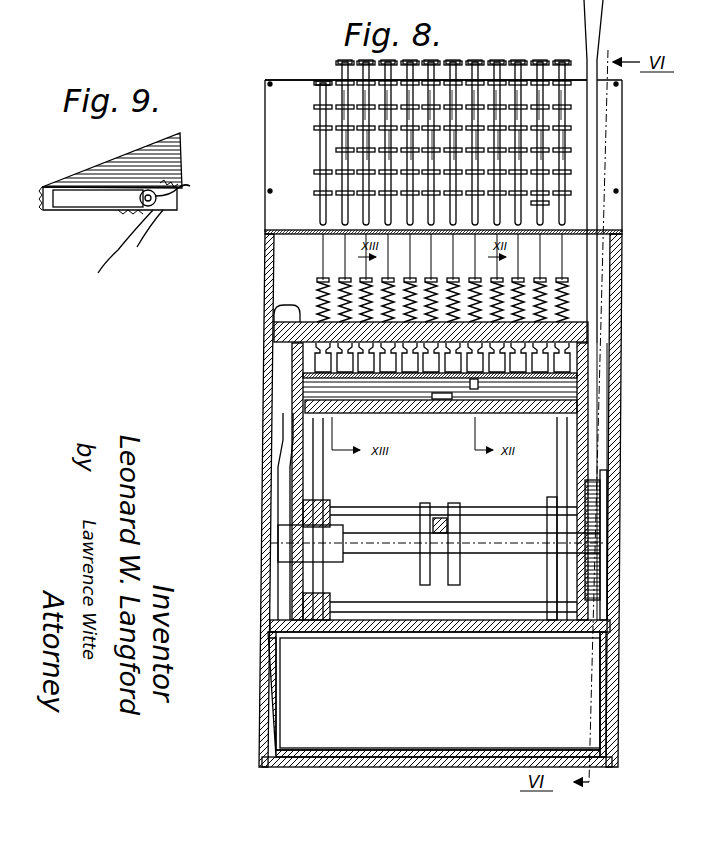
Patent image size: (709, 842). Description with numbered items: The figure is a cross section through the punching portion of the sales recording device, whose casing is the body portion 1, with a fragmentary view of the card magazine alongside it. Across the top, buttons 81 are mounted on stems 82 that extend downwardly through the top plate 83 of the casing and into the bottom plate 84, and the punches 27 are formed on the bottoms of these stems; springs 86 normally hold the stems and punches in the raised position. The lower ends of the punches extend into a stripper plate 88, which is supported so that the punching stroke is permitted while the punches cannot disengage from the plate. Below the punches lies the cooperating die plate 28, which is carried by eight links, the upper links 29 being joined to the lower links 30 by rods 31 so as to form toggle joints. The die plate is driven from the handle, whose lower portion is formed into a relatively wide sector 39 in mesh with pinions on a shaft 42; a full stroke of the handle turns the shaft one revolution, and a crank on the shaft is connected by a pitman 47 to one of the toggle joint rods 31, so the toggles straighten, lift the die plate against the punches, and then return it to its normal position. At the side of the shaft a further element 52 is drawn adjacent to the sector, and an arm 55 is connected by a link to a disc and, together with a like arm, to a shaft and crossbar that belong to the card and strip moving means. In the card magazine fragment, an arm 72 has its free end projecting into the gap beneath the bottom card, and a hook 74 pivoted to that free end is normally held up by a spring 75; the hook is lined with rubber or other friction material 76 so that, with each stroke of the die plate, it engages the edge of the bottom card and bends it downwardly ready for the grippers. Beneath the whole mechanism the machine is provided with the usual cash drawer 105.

In FIG. 8, the body portion 1 is at (618, 718).
In FIG. 8, the punches 27 is at (268, 366).
In FIG. 8, the die plate 28 is at (418, 415).
In FIG. 8, the upper links 29 is at (318, 480).
In FIG. 8, the lower links 30 is at (550, 572).
In FIG. 8, the rods 31 is at (405, 512).
In FIG. 8, the sector 39 is at (596, 497).
In FIG. 8, the shaft 42 is at (487, 548).
In FIG. 8, the pitman 47 is at (437, 562).
In FIG. 8, the rod 52 is at (604, 582).
In FIG. 8, the arm 55 is at (275, 497).
In FIG. 9, the arm 72 is at (92, 202).
In FIG. 9, the hook 74 is at (142, 240).
In FIG. 9, the spring 75 is at (122, 253).
In FIG. 9, the friction material 76 is at (190, 186).
In FIG. 8, the buttons 81 is at (571, 158).
In FIG. 8, the stems 82 is at (345, 216).
In FIG. 8, the top plate 83 is at (287, 172).
In FIG. 8, the bottom plate 84 is at (272, 314).
In FIG. 8, the springs 86 is at (317, 297).
In FIG. 8, the stripper plate 88 is at (263, 385).
In FIG. 8, the cash drawer 105 is at (448, 630).